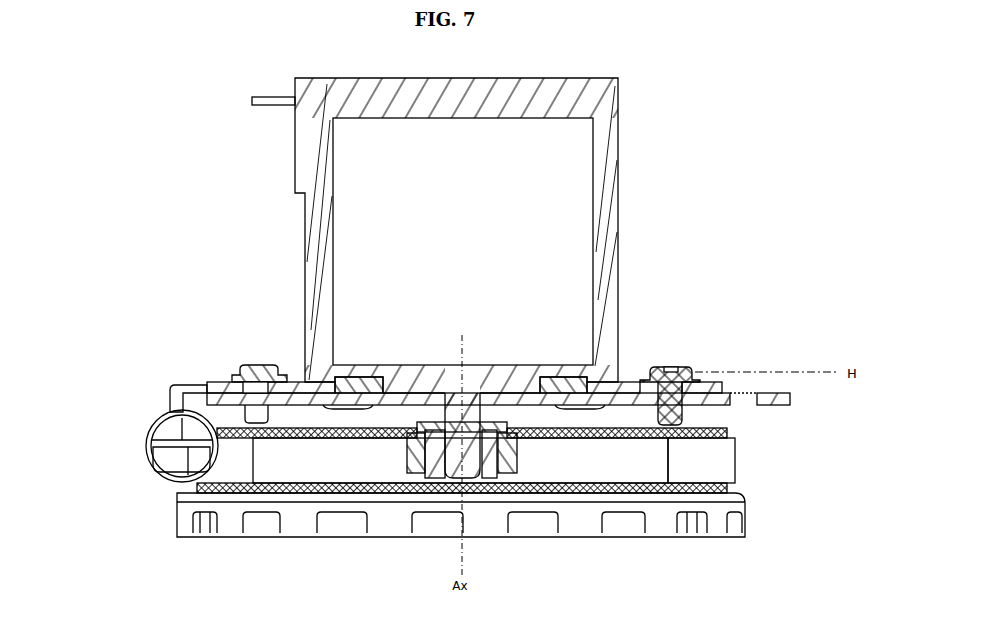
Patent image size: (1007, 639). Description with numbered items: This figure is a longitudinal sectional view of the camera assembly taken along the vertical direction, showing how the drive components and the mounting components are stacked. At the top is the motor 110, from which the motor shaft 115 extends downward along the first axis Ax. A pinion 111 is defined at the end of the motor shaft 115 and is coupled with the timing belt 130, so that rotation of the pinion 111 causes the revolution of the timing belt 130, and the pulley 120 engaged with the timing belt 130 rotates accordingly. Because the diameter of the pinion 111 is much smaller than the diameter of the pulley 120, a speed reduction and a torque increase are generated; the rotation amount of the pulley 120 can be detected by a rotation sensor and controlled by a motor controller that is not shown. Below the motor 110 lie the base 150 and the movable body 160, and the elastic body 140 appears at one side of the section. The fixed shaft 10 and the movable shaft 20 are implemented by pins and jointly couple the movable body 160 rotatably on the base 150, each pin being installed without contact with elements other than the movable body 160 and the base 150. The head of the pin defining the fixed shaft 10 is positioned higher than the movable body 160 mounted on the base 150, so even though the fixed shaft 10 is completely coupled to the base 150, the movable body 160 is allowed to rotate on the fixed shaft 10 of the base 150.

The motor 110 is at (618, 208).
The motor shaft 115 is at (470, 467).
The pinion 111 is at (517, 473).
The base 150 is at (205, 383).
The movable body 160 is at (217, 382).
The elastic body 140 is at (146, 457).
The timing belt 130 is at (303, 468).
The pulley 120 is at (393, 507).
The movable shaft 20 is at (250, 365).
The fixed shaft 10 is at (688, 367).